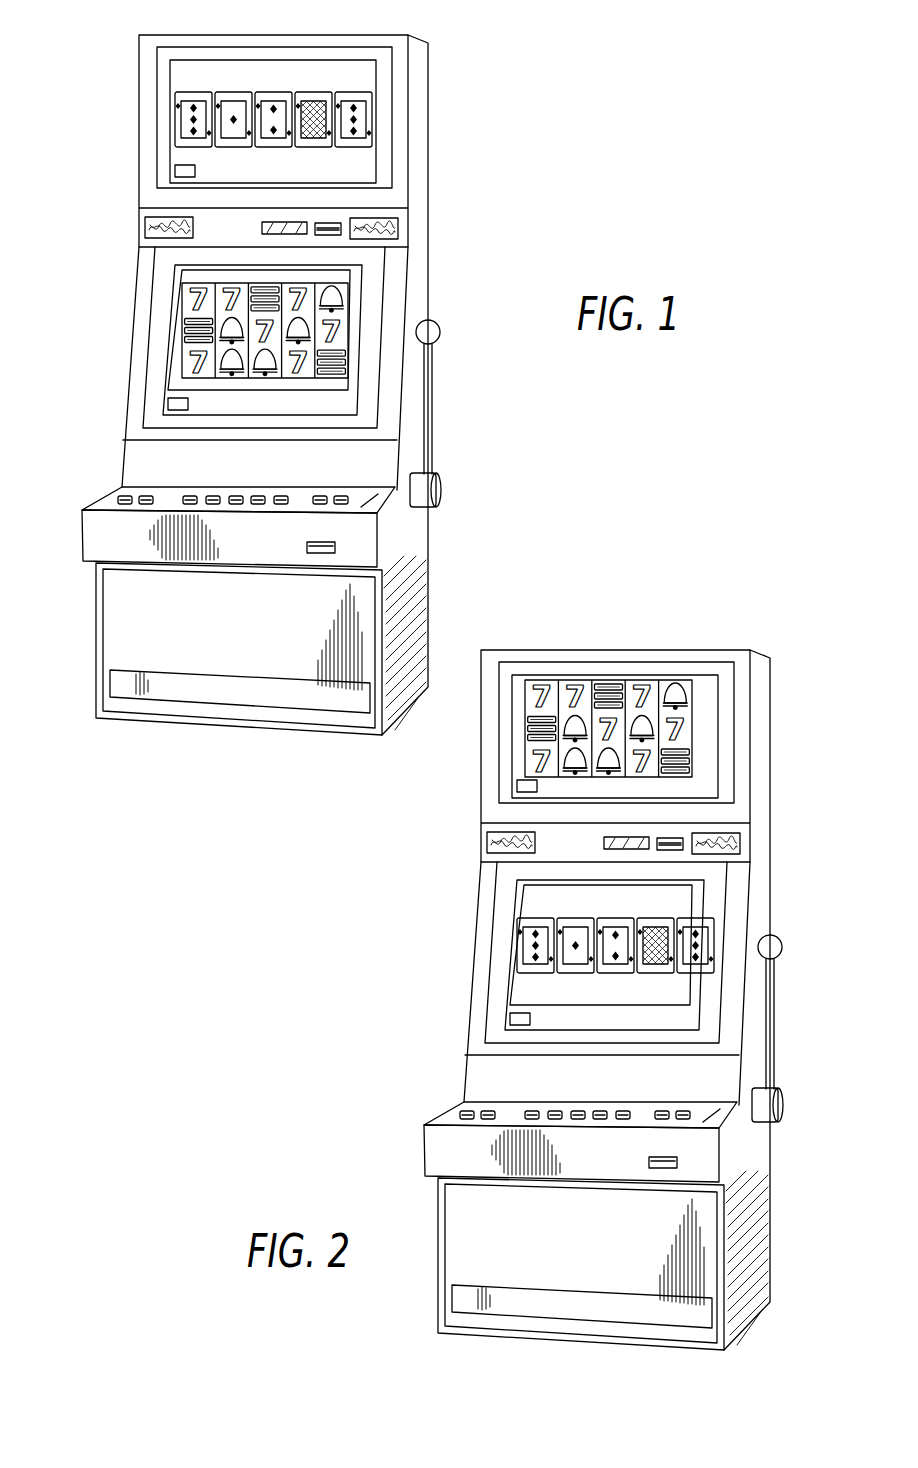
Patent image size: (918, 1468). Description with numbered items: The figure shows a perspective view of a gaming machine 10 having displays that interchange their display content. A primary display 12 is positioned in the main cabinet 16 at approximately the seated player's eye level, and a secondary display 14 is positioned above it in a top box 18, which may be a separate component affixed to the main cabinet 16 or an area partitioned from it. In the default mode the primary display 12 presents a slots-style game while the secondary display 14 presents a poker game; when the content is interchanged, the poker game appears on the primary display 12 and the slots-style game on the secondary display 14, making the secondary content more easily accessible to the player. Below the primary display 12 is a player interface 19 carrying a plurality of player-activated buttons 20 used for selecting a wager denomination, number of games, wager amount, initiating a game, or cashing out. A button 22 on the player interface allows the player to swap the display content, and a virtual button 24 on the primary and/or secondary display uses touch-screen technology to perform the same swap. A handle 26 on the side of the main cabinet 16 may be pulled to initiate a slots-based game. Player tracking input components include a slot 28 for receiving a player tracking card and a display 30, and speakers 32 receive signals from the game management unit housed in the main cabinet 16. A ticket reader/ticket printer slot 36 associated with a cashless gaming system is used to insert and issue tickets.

In FIG. 1, the gaming machine 10 is at (625, 130).
In FIG. 2, the gaming machine 10 is at (476, 1000).
In FIG. 1, the primary display 12 is at (355, 303).
In FIG. 2, the primary display 12 is at (669, 955).
In FIG. 1, the secondary display 14 is at (210, 75).
In FIG. 2, the secondary display 14 is at (620, 708).
In FIG. 1, the main cabinet 16 is at (80, 212).
In FIG. 2, the main cabinet 16 is at (556, 1001).
In FIG. 1, the top box 18 is at (458, 28).
In FIG. 2, the top box 18 is at (668, 752).
In FIG. 1, the player interface 19 is at (362, 507).
In FIG. 2, the player interface 19 is at (637, 1135).
In FIG. 1, the player-activated buttons 20 is at (341, 496).
In FIG. 2, the player-activated buttons 20 is at (647, 1074).
In FIG. 1, the button 22 is at (145, 496).
In FIG. 2, the button 22 is at (455, 1092).
In FIG. 1, the virtual button 24 is at (175, 171).
In FIG. 2, the virtual button 24 is at (476, 892).
In FIG. 1, the handle 26 is at (441, 332).
In FIG. 2, the handle 26 is at (805, 1012).
In FIG. 1, the slot for receiving a player tracking card 28 is at (331, 236).
In FIG. 2, the slot for receiving a player tracking card 28 is at (752, 867).
In FIG. 1, the display 30 is at (289, 222).
In FIG. 2, the display 30 is at (709, 821).
In FIG. 1, the speakers 32 is at (146, 227).
In FIG. 2, the speakers 32 is at (653, 848).
In FIG. 1, the ticket reader/ticket printer slot 36 is at (336, 548).
In FIG. 2, the ticket reader/ticket printer slot 36 is at (745, 1181).